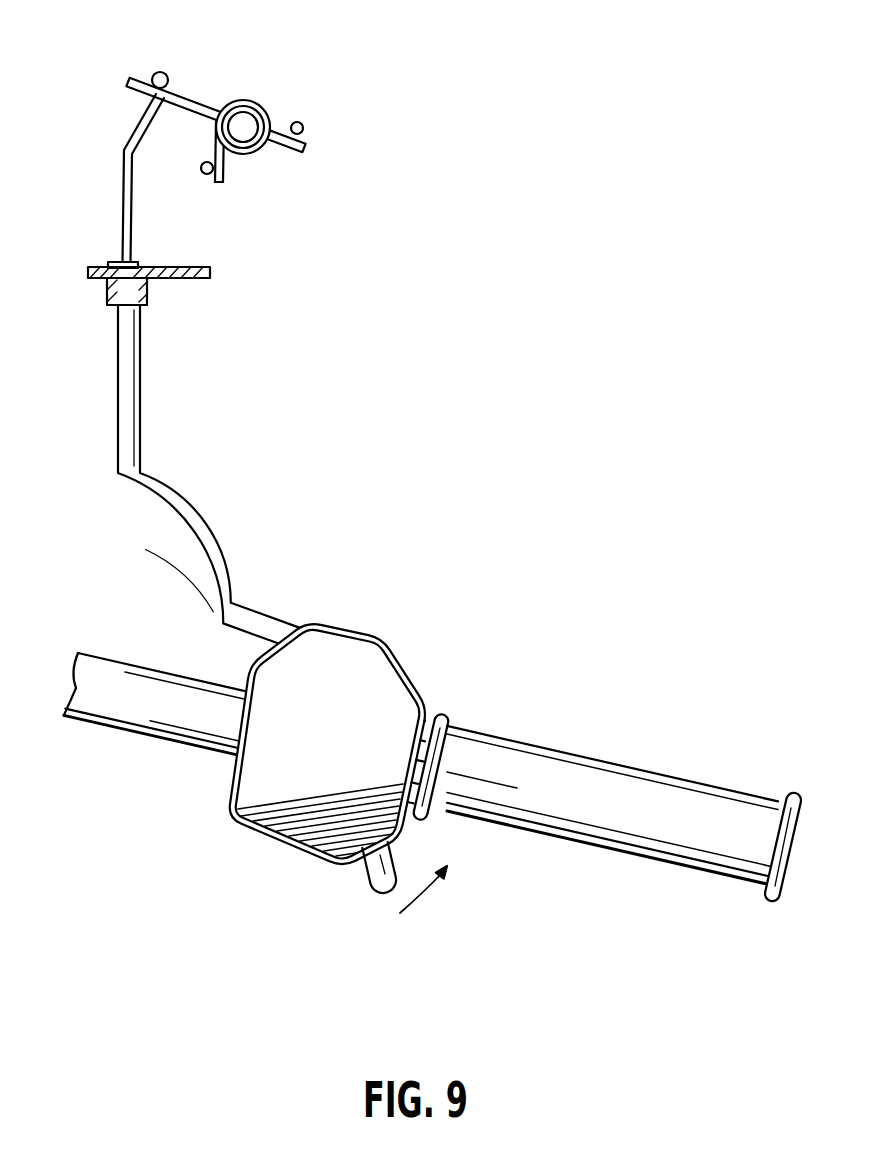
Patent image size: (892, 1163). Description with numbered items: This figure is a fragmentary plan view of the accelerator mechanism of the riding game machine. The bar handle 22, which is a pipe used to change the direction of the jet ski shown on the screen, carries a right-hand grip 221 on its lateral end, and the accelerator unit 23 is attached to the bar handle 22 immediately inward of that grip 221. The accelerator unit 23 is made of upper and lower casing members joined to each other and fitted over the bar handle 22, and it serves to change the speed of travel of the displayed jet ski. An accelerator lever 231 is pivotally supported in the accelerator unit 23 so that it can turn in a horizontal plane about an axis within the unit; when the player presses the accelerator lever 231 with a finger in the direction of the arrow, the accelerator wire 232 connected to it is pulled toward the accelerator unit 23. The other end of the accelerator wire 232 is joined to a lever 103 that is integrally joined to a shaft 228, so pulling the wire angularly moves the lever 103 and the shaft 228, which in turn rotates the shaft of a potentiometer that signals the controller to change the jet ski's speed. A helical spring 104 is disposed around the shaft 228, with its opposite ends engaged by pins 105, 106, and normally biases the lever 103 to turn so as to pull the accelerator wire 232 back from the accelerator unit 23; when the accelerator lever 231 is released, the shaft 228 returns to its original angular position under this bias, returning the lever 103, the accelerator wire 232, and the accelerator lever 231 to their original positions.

The bar handle 22 is at (115, 713).
The accelerator unit 23 is at (280, 827).
The lever 103 is at (200, 101).
The helical spring 104 is at (266, 113).
The pin 105 is at (206, 174).
The pin 106 is at (304, 131).
The grip 221 is at (640, 833).
The shaft 228 is at (250, 118).
The accelerator lever 231 is at (373, 867).
The accelerator wire 232 is at (147, 505).